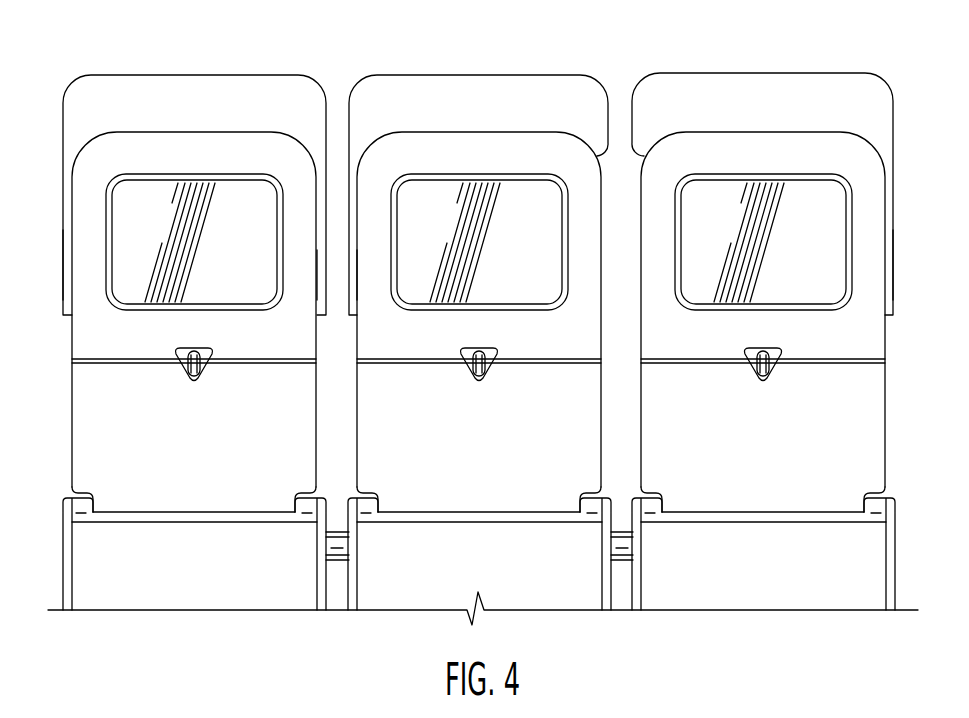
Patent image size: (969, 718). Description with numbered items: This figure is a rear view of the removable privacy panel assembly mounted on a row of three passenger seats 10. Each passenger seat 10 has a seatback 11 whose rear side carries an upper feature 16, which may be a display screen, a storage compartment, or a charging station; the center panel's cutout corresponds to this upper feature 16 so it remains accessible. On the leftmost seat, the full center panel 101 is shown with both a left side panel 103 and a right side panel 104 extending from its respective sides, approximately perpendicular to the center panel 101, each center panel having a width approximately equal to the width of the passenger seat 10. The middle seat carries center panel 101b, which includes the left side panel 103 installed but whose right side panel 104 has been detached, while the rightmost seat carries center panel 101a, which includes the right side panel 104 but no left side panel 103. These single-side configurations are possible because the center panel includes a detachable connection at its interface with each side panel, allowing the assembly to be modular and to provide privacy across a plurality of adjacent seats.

The passenger seat 10 is at (227, 490).
The seatback 11 is at (136, 465).
The upper feature 16 is at (257, 262).
The center panel 101 is at (145, 93).
The center panel 101a is at (727, 92).
The center panel 101b is at (428, 92).
The left side panel 103 is at (64, 226).
The right side panel 104 is at (317, 300).